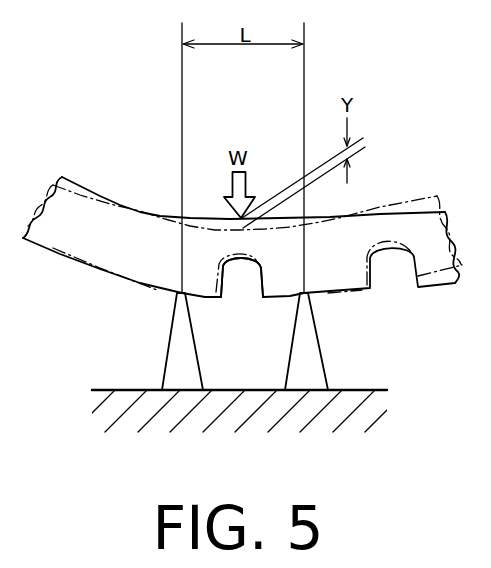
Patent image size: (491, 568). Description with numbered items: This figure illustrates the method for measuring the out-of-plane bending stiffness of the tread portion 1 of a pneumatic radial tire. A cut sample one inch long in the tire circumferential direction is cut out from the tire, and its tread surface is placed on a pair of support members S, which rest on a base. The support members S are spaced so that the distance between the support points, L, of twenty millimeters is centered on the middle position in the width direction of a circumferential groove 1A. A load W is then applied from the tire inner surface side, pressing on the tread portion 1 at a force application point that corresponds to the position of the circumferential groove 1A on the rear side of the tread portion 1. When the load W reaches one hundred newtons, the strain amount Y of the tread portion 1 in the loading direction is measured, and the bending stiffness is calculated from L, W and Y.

The tread portion 1 is at (100, 275).
The circumferential groove 1A is at (224, 268).
The support members S is at (172, 352).